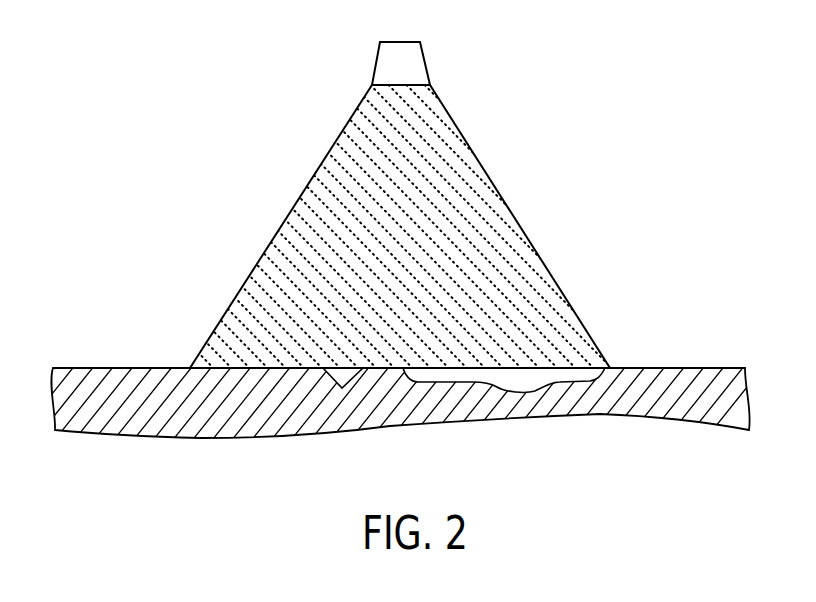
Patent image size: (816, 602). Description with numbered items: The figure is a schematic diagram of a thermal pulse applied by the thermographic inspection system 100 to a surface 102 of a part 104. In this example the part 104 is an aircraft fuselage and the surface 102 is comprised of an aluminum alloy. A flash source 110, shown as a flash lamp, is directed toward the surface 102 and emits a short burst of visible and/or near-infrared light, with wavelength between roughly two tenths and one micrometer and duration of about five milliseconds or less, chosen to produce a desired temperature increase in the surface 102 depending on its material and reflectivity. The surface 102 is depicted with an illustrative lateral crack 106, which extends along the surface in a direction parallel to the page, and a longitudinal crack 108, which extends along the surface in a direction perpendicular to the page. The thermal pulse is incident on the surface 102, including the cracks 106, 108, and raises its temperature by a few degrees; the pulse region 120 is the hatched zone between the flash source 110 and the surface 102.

The thermographic inspection system 100 is at (198, 113).
The surface 102 is at (700, 354).
The part 104 is at (713, 410).
The lateral crack 106 is at (521, 384).
The longitudinal crack 108 is at (343, 381).
The flash source 110 is at (423, 57).
The conical body 120 is at (505, 217).